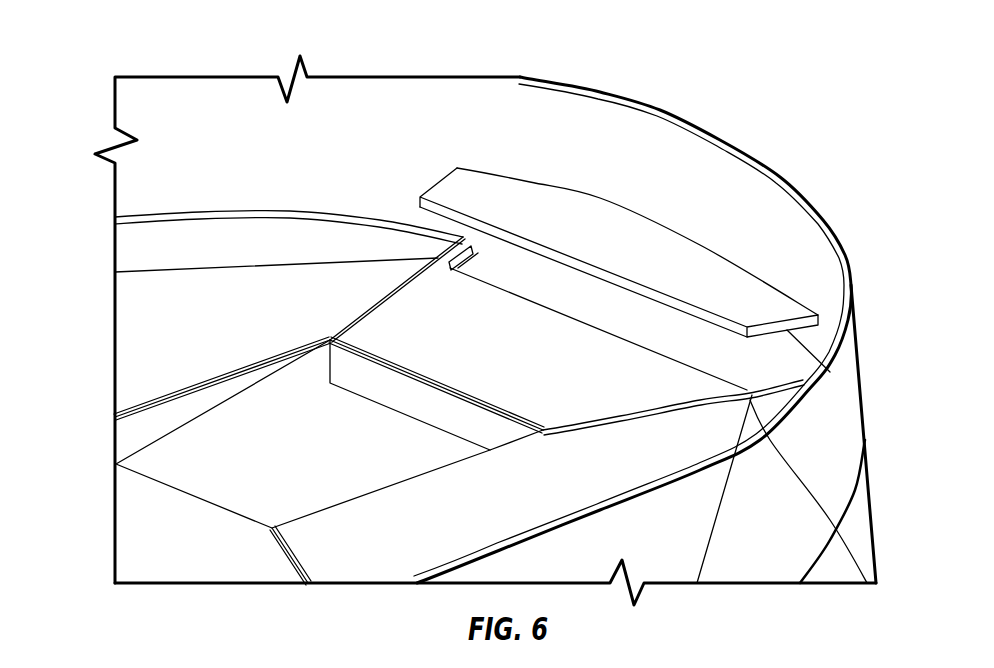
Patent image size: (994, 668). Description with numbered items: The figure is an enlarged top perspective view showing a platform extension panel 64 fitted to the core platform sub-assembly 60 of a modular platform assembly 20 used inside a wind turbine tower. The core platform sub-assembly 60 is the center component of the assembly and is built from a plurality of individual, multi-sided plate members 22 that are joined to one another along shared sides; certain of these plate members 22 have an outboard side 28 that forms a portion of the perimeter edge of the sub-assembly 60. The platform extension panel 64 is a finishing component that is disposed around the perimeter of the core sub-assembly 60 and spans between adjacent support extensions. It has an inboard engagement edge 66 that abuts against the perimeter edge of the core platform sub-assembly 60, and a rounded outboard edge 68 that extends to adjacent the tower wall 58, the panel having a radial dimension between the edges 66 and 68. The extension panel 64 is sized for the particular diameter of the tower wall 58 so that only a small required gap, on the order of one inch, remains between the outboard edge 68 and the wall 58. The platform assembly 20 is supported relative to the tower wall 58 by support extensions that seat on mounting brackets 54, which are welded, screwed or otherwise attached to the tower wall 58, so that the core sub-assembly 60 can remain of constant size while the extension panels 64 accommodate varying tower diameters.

The platform assembly 20 is at (80, 68).
The plate member 22 is at (228, 336).
The outboard side 28 is at (643, 347).
The mounting bracket 54 is at (328, 452).
The tower wall 58 is at (860, 367).
The core platform sub-assembly 60 is at (316, 288).
The platform extension panel 64 is at (693, 247).
The inboard engagement edge 66 is at (562, 255).
The outboard edge 68 is at (565, 187).